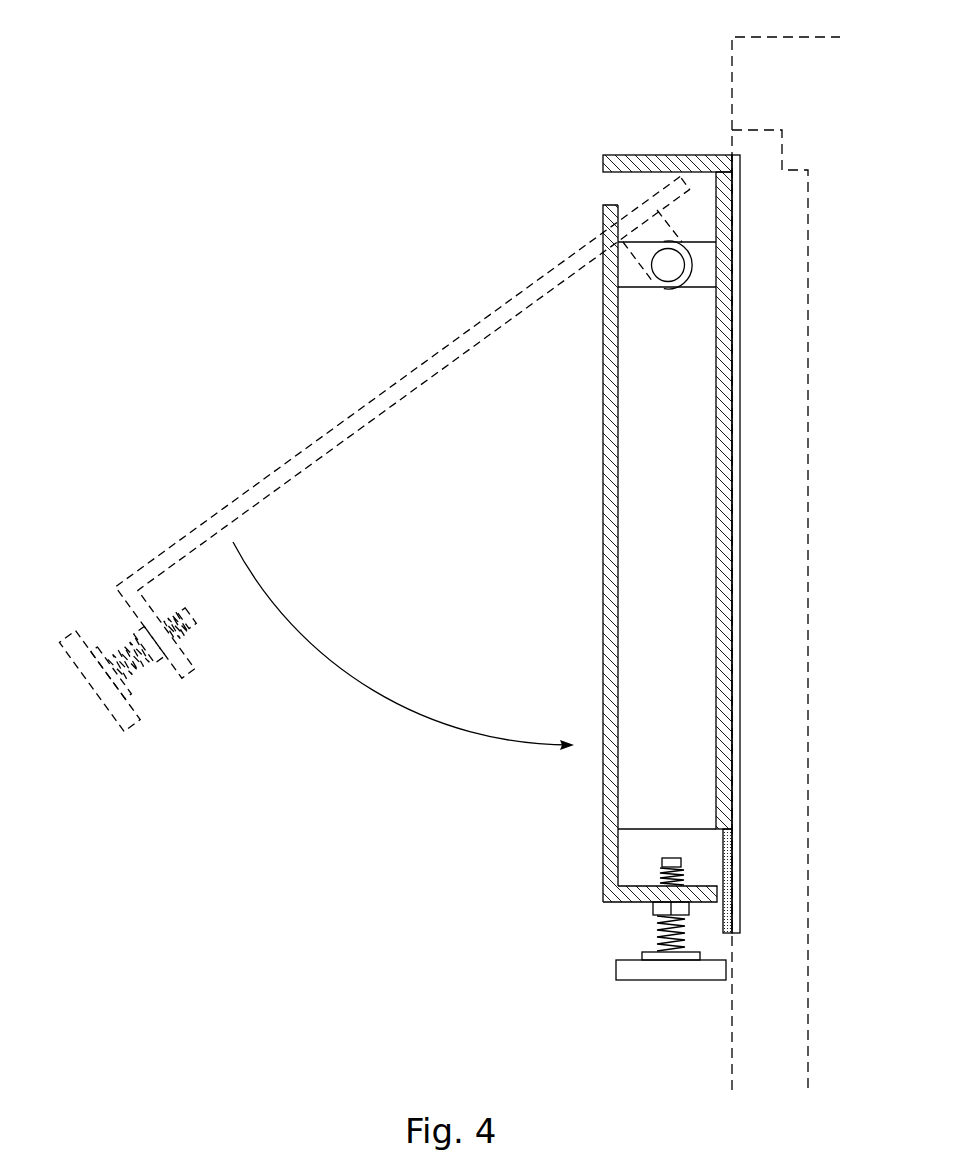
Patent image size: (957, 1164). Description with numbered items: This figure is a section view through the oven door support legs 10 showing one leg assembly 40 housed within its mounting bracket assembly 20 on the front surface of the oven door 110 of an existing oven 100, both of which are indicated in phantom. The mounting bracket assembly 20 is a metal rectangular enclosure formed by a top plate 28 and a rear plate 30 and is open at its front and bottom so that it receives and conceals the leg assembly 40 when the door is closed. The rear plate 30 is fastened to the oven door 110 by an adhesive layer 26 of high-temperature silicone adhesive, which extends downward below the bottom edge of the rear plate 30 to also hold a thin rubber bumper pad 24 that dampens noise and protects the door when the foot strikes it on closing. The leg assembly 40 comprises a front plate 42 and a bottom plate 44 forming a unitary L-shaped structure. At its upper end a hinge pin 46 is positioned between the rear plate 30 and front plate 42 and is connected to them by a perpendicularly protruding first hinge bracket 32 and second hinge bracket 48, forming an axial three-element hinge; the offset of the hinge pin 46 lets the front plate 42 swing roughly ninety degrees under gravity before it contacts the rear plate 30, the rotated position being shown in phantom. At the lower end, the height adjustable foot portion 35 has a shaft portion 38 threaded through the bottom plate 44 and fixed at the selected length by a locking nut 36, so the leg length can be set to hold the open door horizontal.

The oven door support legs 10 is at (122, 119).
The mounting bracket assembly 20 is at (757, 573).
The bumper pad 24 is at (730, 877).
The adhesive layer 26 is at (740, 462).
The top plate 28 is at (675, 156).
The rear plate 30 is at (732, 340).
The first hinge bracket 32 is at (706, 274).
The foot portion 35 is at (657, 977).
The locking nut 36 is at (650, 912).
The shaft portion 38 is at (660, 862).
The leg assembly 40 is at (555, 637).
The front plate 42 is at (610, 790).
The bottom plate 44 is at (630, 903).
The hinge pin 46 is at (668, 265).
The second hinge bracket 48 is at (631, 273).
The oven 100 is at (732, 80).
The oven door 110 is at (797, 268).